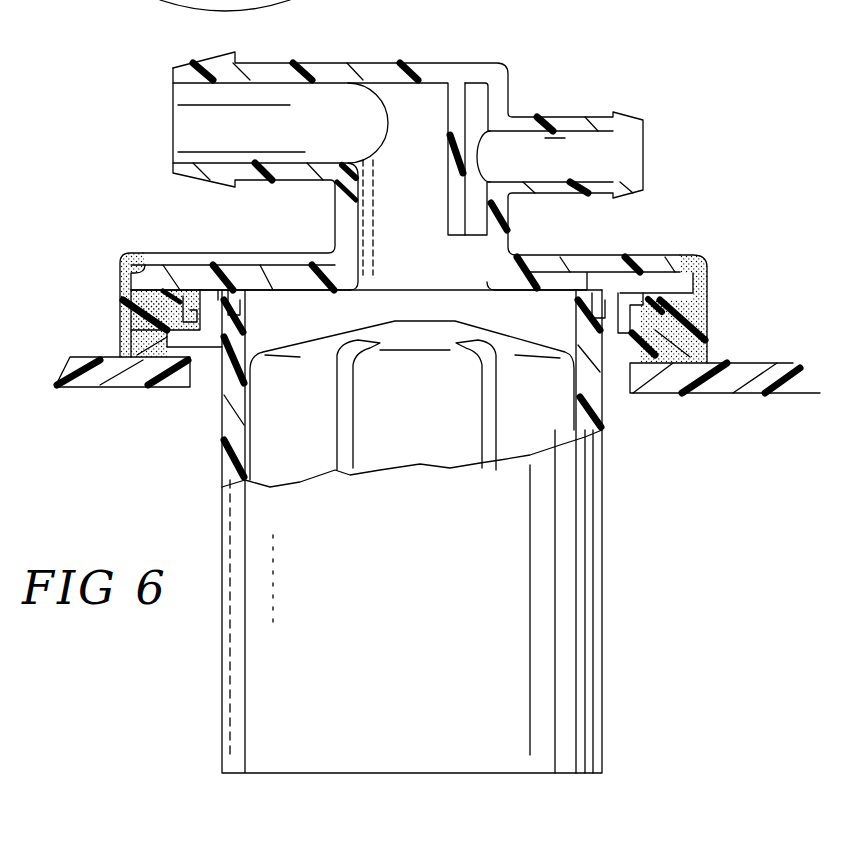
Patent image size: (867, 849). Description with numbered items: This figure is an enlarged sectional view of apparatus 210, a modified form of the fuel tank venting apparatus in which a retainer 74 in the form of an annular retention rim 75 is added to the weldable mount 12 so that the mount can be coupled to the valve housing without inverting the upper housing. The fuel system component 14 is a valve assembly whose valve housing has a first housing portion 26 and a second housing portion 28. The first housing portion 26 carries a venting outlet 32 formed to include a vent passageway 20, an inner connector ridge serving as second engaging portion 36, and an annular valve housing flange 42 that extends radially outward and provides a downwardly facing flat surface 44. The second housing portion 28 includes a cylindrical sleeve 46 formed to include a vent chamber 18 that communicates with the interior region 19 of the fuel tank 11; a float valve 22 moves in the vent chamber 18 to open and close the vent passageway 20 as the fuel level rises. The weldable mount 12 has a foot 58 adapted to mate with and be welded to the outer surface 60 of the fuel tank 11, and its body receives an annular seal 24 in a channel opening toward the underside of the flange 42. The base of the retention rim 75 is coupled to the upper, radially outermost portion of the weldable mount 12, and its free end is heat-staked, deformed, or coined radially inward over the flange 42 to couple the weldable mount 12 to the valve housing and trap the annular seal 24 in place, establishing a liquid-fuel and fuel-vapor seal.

The apparatus 210 is at (648, 66).
The venting outlet 32 is at (387, 64).
The first housing portion 26 is at (534, 74).
The fuel system component 14 is at (556, 110).
The vent passageway 20 is at (360, 250).
The second engaging portion 36 is at (622, 254).
The annular valve housing flange 42 is at (190, 272).
The retainer 74 is at (110, 262).
The annular retention rim 75 is at (139, 255).
The weldable mount 12 is at (115, 336).
The downwardly facing flat surface 44 is at (135, 304).
The annular seal 24 is at (657, 300).
The foot 58 is at (147, 358).
The outer surface 60 is at (740, 363).
The interior region 19 is at (765, 425).
The fuel tank 11 is at (714, 392).
The vent chamber 18 is at (499, 314).
The valve 22 is at (410, 432).
The cylindrical sleeve 46 is at (238, 450).
The second housing portion 28 is at (606, 687).